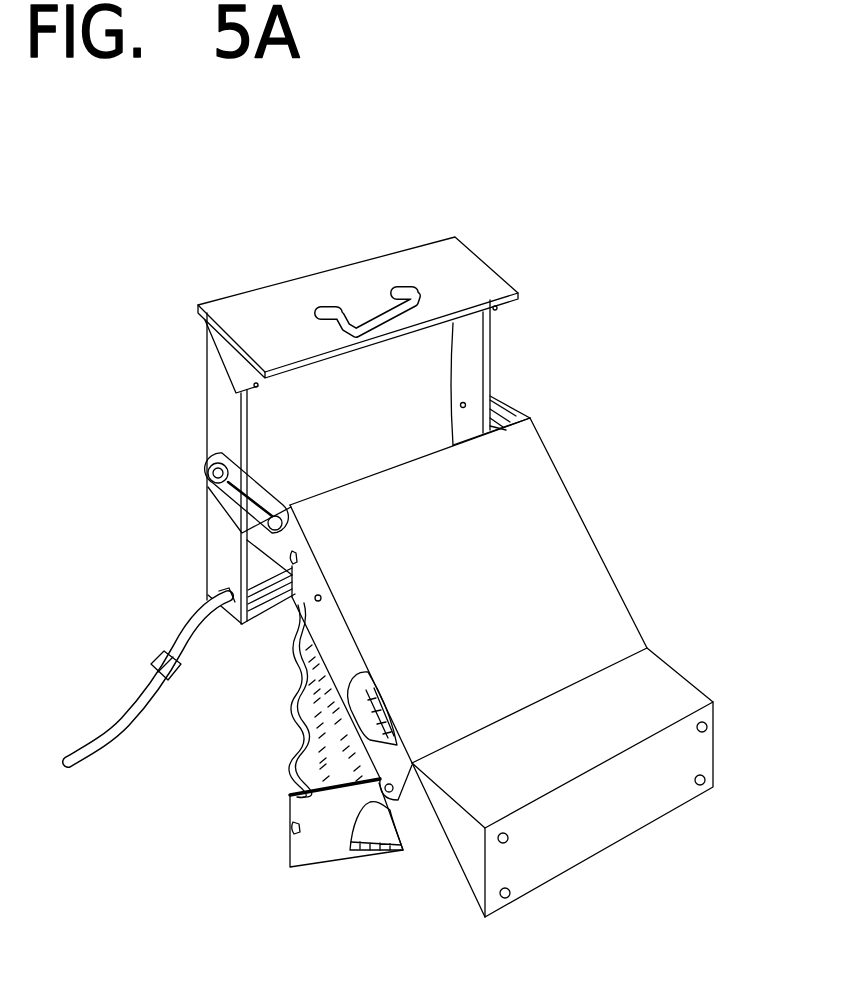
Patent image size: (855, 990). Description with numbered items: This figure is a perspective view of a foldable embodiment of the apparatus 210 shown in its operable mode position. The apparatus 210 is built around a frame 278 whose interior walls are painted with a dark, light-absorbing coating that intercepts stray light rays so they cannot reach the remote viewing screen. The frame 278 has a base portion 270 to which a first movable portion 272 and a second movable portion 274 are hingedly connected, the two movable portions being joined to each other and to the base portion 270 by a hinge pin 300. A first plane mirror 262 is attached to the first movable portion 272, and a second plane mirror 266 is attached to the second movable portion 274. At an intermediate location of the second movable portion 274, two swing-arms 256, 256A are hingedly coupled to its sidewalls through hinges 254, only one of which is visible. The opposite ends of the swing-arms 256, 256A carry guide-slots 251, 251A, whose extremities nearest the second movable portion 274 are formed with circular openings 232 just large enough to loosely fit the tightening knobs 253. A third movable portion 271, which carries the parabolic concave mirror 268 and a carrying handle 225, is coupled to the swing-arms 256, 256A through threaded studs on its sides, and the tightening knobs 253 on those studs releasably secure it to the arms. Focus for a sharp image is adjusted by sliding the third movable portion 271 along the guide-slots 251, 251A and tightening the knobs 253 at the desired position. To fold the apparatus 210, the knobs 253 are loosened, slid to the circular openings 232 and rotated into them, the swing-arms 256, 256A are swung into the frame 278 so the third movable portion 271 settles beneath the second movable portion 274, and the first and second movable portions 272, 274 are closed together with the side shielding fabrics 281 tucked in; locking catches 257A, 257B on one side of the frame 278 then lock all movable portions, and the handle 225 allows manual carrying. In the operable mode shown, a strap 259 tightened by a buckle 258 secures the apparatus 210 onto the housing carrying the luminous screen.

The apparatus 210 is at (519, 667).
The carrying handle 225 is at (438, 283).
The circular opening 232 is at (283, 525).
The guide-slot 251 is at (240, 532).
The guide-slot 251A is at (512, 412).
The tightening knob 253 is at (208, 476).
The hinge 254 is at (323, 599).
The swing-arm 256 is at (270, 487).
The swing-arm 256A is at (497, 403).
The locking catch 257A is at (290, 829).
The locking catch 257B is at (306, 567).
The buckle 258 is at (160, 658).
The strap 259 is at (193, 613).
The first plane mirror 262 is at (377, 838).
The second plane mirror 266 is at (358, 680).
The parabolic concave mirror 268 is at (374, 442).
The base portion 270 is at (622, 840).
The third movable portion 271 is at (478, 258).
The first movable portion 272 is at (313, 870).
The second movable portion 274 is at (578, 509).
The frame 278 is at (655, 652).
The side shielding fabric 281 is at (300, 742).
The hinge pin 300 is at (396, 786).